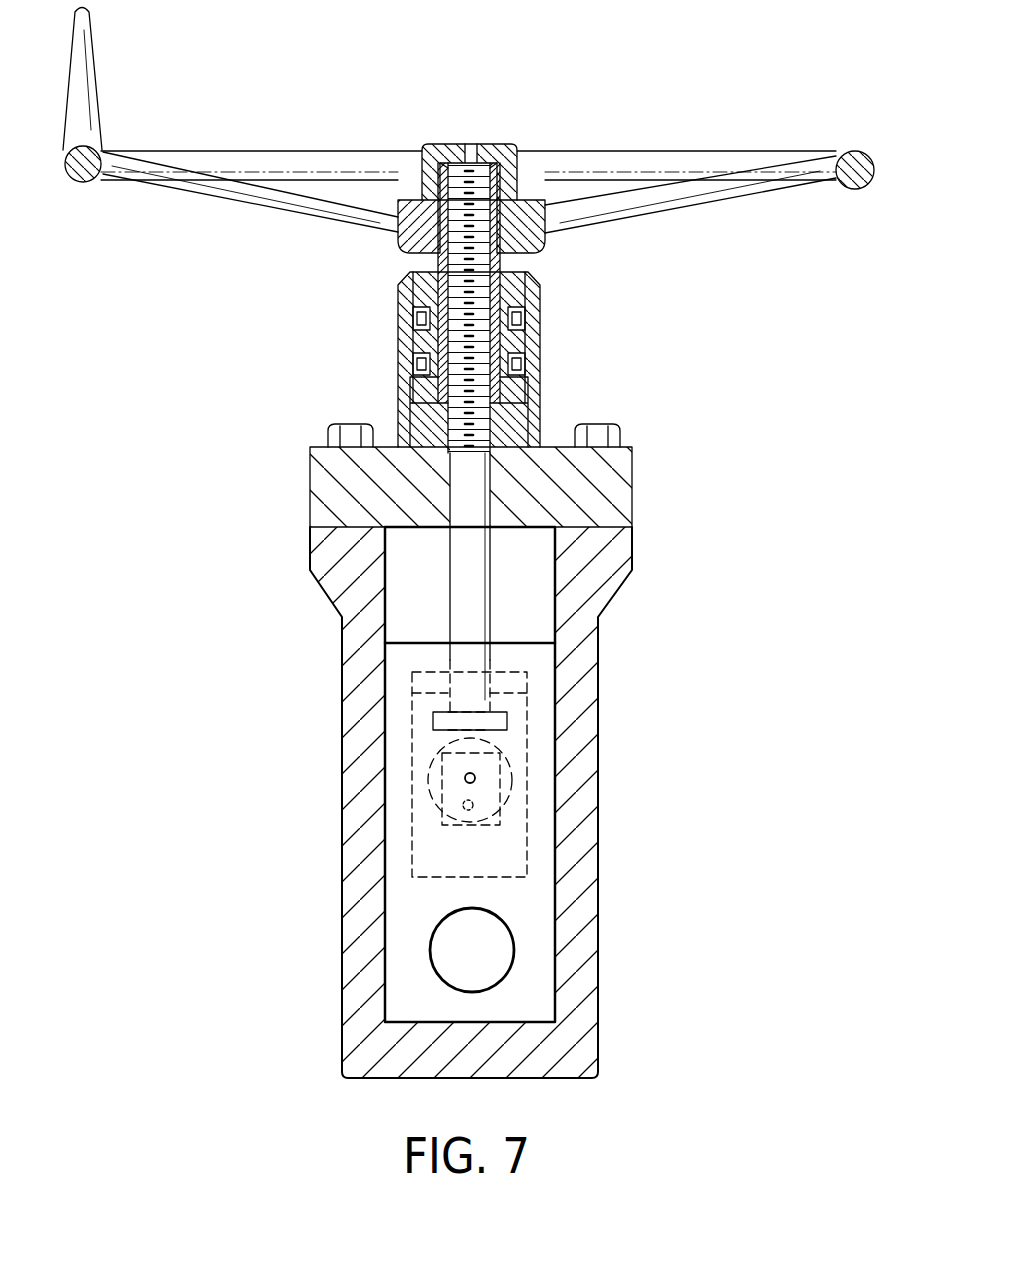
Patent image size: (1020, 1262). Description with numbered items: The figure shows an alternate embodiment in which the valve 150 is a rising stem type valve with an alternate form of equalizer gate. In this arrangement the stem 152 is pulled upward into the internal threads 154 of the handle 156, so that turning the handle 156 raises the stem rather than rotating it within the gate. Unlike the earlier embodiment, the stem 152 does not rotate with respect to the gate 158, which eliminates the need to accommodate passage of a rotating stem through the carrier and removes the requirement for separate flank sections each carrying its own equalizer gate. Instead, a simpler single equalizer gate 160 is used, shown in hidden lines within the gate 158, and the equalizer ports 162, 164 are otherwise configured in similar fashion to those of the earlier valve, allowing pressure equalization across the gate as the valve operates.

The valve 150 is at (732, 541).
The stem 152 is at (472, 480).
The internal threads 154 is at (468, 213).
The handle 156 is at (712, 166).
The gate 158 is at (527, 913).
The single equalizer gate 160 is at (490, 768).
The equalizer port 162 is at (465, 778).
The equalizer port 164 is at (462, 805).